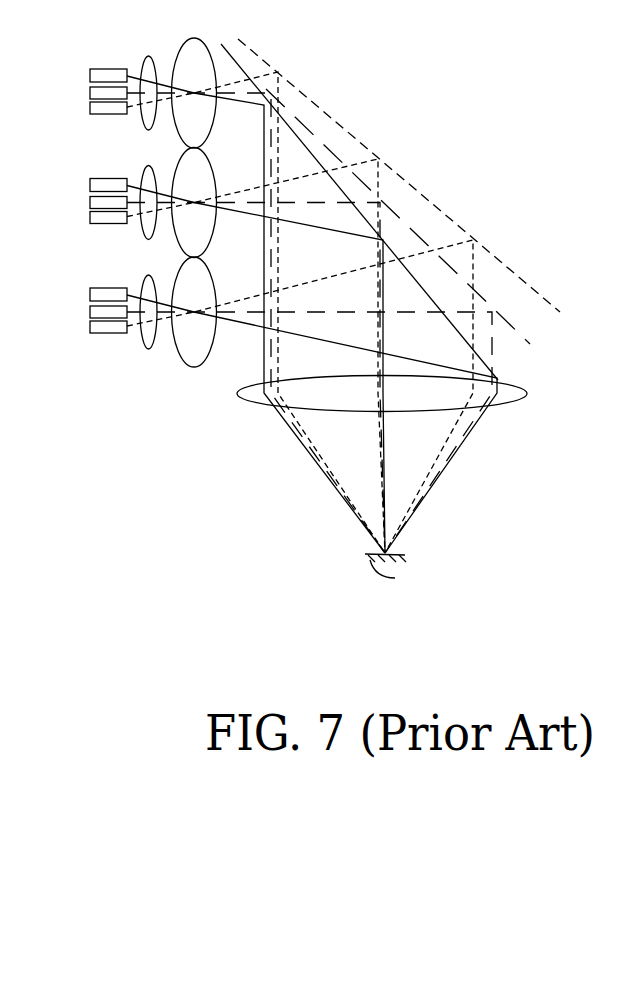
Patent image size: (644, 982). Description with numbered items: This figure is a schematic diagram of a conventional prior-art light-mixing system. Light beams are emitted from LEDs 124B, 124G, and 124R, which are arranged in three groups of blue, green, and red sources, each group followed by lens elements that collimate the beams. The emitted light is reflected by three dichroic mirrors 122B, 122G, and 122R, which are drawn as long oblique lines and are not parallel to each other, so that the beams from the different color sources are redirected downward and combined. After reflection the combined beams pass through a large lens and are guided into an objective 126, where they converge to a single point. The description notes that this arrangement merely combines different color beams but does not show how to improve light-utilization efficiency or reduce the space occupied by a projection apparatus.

The LED 124B is at (90, 75).
The LED 124G is at (90, 92).
The LED 124R is at (90, 106).
The dichroic mirror 122B is at (523, 277).
The dichroic mirror 122G is at (505, 322).
The dichroic mirror 122R is at (483, 357).
The objective 126 is at (395, 555).